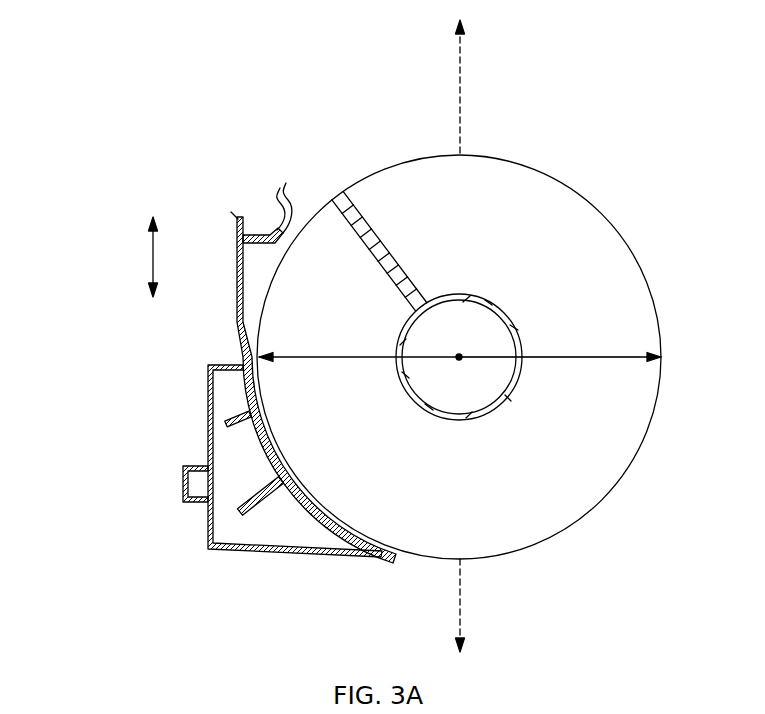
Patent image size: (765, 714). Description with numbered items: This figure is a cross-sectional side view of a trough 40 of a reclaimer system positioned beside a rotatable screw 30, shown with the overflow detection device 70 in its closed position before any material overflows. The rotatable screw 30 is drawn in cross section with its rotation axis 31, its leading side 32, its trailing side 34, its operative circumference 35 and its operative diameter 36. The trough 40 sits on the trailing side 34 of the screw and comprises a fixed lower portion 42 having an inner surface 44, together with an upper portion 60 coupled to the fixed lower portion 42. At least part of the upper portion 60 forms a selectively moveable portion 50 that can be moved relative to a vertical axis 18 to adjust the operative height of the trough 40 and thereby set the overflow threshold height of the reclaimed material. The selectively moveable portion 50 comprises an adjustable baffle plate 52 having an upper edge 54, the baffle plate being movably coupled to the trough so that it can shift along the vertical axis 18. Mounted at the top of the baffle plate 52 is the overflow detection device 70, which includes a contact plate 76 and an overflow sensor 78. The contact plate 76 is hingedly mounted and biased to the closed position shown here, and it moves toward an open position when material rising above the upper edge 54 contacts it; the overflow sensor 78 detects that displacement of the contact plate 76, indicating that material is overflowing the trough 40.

The vertical axis 18 is at (462, 82).
The rotatable screw 30 is at (531, 162).
The rotation axis 31 is at (459, 360).
The leading side 32 is at (662, 357).
The trailing side 34 is at (262, 378).
The operative circumference 35 is at (627, 243).
The operative diameter 36 is at (550, 355).
The trough 40 is at (108, 253).
The fixed lower portion 42 is at (196, 430).
The inner surface 44 is at (300, 505).
The selectively moveable portion 50 is at (240, 343).
The adjustable baffle plate 52 is at (245, 327).
The upper edge 54 is at (243, 312).
The upper portion 60 is at (226, 327).
The overflow detection device 70 is at (265, 232).
The contact plate 76 is at (237, 238).
The overflow sensor 78 is at (255, 233).